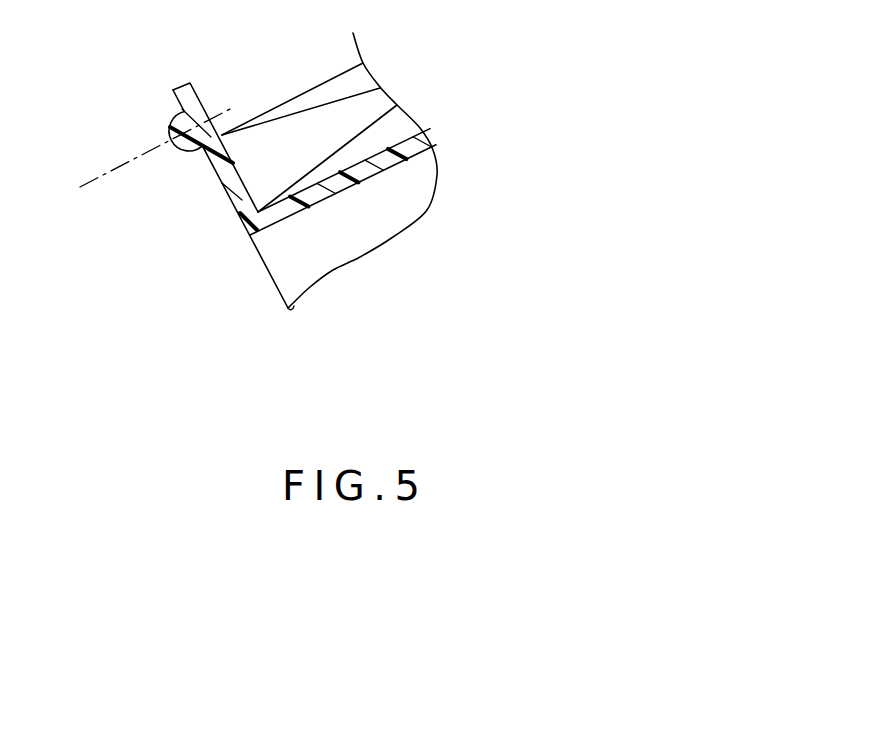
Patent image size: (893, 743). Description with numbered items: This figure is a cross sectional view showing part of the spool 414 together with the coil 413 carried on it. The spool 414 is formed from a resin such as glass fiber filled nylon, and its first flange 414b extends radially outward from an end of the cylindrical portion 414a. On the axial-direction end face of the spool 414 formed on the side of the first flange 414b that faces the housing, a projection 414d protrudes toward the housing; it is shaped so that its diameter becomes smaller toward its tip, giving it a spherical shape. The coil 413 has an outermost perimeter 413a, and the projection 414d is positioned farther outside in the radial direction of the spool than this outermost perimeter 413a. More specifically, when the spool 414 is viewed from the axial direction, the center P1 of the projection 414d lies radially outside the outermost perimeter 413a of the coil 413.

The coil 413 is at (367, 110).
The outermost perimeter of the coil 413a is at (292, 98).
The spool 414 is at (377, 270).
The cylindrical portion 414a is at (367, 175).
The first flange 414b is at (240, 200).
The projection 414d is at (181, 122).
The center of the projection P1 is at (97, 175).